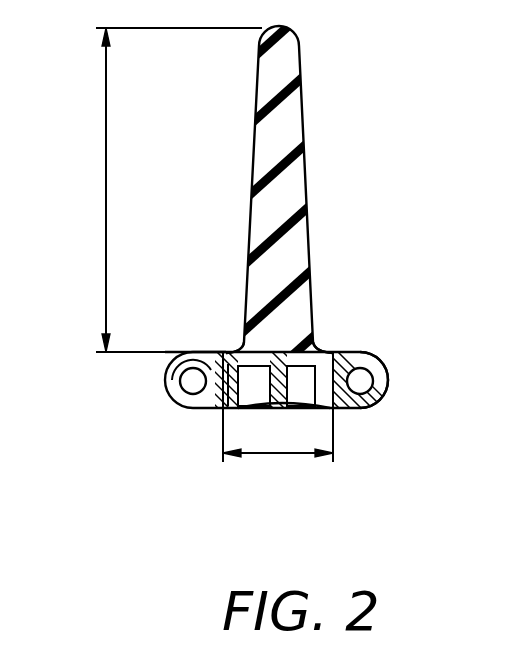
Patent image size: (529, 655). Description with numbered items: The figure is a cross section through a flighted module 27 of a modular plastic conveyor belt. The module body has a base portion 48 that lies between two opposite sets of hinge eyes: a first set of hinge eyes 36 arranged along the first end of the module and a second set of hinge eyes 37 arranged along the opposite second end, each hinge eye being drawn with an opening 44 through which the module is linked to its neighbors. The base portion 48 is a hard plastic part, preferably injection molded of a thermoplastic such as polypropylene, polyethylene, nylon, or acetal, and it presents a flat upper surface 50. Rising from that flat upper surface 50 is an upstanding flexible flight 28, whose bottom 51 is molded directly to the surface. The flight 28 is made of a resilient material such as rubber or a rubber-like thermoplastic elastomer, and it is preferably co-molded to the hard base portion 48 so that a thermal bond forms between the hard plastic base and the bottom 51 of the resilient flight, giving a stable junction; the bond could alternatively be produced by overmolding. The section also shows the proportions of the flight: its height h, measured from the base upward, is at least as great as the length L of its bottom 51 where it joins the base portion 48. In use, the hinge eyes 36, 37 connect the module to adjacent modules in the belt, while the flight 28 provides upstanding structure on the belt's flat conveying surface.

The flight 28 is at (290, 117).
The first set of hinge eyes 36 is at (172, 382).
The mounting holes 44 is at (193, 392).
The base portion 48 is at (175, 355).
The bottom of the flight 51 is at (242, 342).
The flat upper surface 50 is at (340, 352).
The second set of hinge eyes 37 is at (378, 368).
The flighted module 27 is at (378, 395).
The height of the flight h is at (106, 221).
The length of the flight bottom L is at (283, 455).